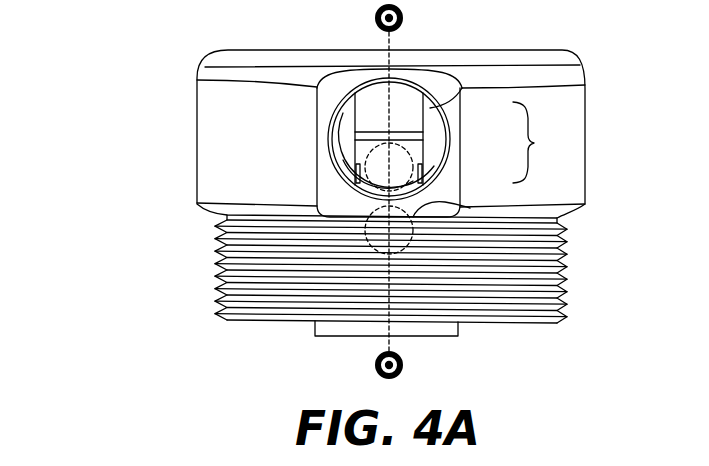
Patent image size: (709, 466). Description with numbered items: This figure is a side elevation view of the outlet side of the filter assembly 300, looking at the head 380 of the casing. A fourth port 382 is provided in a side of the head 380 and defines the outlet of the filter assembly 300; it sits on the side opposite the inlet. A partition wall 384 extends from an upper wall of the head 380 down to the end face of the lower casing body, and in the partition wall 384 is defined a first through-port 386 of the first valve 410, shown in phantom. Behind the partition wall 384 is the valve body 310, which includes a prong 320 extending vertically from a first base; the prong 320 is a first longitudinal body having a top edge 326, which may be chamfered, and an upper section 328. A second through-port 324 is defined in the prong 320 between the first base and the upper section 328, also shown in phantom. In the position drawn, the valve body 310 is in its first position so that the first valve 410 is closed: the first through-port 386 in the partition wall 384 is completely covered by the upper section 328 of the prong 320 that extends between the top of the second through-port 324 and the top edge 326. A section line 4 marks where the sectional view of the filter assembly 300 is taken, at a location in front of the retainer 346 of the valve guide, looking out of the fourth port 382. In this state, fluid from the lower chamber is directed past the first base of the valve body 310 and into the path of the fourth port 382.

The section line 4- 4 is at (402, 193).
The filter assembly 300 is at (181, 144).
The valve body 310 is at (458, 332).
The prong 320 is at (354, 150).
The second through-port 324 is at (458, 210).
The top edge 326 is at (355, 116).
The upper section 328 is at (333, 170).
The retainer 346 is at (345, 197).
The head 380 is at (588, 138).
The fourth port 382 is at (318, 92).
The partition wall 384 is at (462, 88).
The first through-port 386 is at (430, 138).
The first valve 410 is at (537, 142).